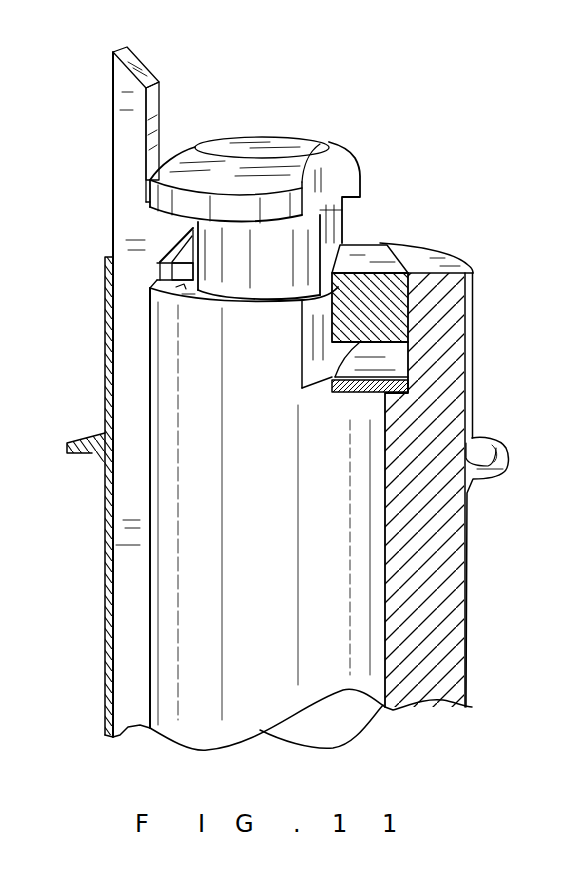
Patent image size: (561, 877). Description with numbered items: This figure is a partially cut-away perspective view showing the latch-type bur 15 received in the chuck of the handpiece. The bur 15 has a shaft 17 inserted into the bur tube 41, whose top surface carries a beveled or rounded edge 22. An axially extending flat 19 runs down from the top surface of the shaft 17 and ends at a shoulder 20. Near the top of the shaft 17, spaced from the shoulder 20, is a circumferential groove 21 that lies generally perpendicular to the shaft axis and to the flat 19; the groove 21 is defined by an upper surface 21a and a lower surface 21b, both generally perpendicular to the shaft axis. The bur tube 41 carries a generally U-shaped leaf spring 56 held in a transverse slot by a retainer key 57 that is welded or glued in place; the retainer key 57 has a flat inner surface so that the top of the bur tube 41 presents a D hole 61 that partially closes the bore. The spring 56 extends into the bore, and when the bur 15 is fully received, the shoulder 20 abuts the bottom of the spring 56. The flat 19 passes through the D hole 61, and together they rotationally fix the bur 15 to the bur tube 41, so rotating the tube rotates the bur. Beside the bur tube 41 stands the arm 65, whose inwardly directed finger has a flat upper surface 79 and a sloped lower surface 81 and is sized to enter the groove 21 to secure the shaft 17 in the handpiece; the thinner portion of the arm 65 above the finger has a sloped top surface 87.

The bur 15 is at (192, 728).
The shaft 17 is at (183, 503).
The flat 19 is at (347, 177).
The shoulder 20 is at (322, 390).
The groove 21 is at (288, 250).
The upper groove surface 21a is at (155, 287).
The lower groove surface 21b is at (312, 217).
The beveled or rounded edge 22 is at (214, 180).
The bur tube 41 is at (473, 347).
The leaf spring 56 is at (360, 392).
The retainer key 57 is at (432, 252).
The D hole 61 is at (352, 252).
The arm 65 is at (112, 125).
The flat upper surface 79 is at (150, 110).
The sloped lower surface 81 is at (157, 263).
The sloped top surface 87 is at (147, 70).